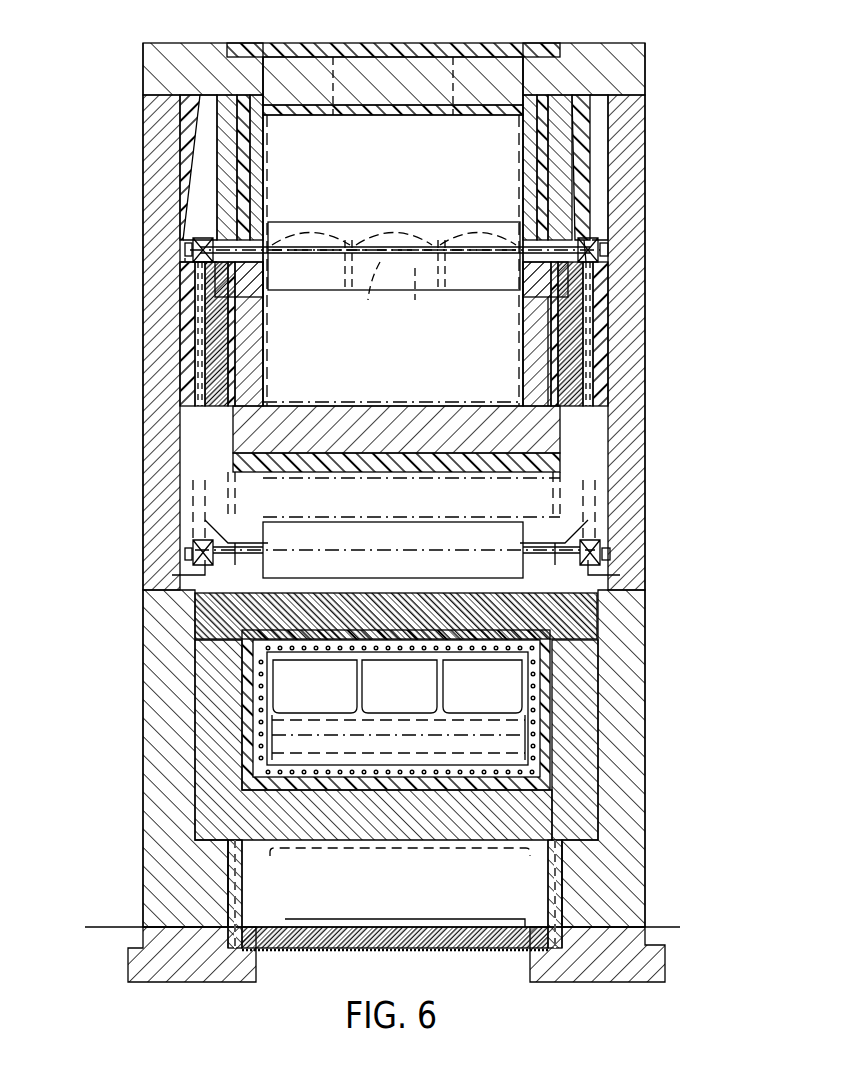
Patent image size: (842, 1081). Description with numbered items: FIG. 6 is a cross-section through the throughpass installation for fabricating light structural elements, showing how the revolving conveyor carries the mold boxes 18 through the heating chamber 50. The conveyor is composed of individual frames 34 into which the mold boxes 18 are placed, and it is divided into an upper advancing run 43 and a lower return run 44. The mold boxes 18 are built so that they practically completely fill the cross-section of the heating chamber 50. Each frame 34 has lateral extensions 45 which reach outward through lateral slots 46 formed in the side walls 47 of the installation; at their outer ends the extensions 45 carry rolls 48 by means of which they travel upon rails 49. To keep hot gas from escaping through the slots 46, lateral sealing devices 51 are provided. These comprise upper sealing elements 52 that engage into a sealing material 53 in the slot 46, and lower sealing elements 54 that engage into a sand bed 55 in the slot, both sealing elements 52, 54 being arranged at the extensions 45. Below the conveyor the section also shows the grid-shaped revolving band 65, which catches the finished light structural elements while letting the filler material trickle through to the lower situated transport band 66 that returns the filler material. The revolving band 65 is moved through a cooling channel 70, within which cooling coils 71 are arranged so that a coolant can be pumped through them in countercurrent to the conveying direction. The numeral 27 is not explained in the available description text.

The mold boxes 18 is at (341, 222).
The lower support 27 is at (422, 301).
The frames 34 is at (372, 295).
The upper advancing run 43 is at (406, 238).
The lower return run 44 is at (253, 566).
The lateral extensions 45 is at (262, 240).
The lateral slots 46 is at (262, 283).
The side walls 47 is at (258, 157).
The rolls 48 is at (199, 238).
The rails 49 is at (202, 262).
The heating chamber 50 is at (421, 143).
The lateral sealing devices 51 is at (583, 224).
The upper sealing elements 52 is at (576, 212).
The sealing material 53 is at (540, 195).
The lower sealing elements 54 is at (530, 290).
The sand bed 55 is at (540, 300).
The grid-shaped revolving band 65 is at (298, 722).
The transport band 66 is at (400, 920).
The cooling channel 70 is at (540, 745).
The cooling coils 71 is at (482, 648).